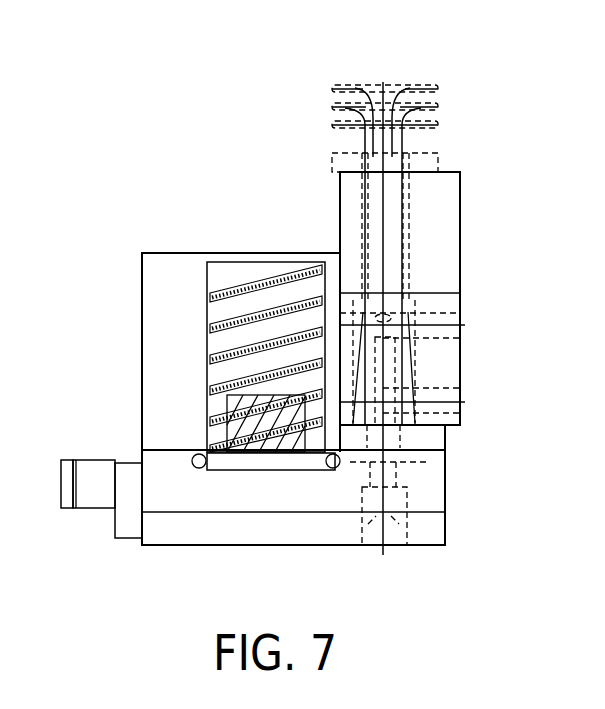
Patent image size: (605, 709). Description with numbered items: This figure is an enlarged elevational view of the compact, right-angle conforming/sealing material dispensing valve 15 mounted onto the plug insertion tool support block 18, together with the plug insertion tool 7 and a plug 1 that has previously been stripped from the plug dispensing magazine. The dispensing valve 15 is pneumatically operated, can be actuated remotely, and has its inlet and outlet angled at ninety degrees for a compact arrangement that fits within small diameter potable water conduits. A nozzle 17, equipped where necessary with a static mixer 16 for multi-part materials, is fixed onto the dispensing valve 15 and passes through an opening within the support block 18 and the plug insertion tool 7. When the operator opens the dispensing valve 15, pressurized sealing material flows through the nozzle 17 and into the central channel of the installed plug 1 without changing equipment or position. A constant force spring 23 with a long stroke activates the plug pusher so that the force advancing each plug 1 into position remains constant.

The plug 1 is at (412, 84).
The plug insertion tool 7 is at (428, 147).
The dispensing valve 15 is at (142, 352).
The static mixer 16 is at (403, 217).
The nozzle 17 is at (382, 137).
The plug insertion tool support block 18 is at (460, 278).
The spring 23 is at (267, 272).